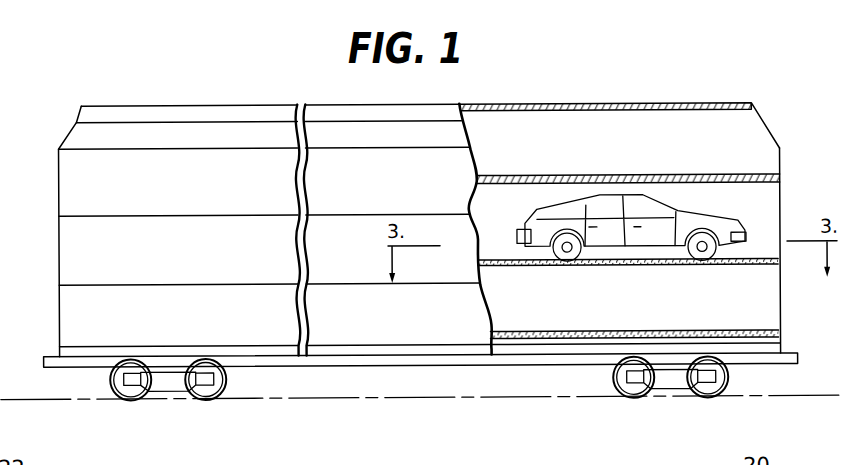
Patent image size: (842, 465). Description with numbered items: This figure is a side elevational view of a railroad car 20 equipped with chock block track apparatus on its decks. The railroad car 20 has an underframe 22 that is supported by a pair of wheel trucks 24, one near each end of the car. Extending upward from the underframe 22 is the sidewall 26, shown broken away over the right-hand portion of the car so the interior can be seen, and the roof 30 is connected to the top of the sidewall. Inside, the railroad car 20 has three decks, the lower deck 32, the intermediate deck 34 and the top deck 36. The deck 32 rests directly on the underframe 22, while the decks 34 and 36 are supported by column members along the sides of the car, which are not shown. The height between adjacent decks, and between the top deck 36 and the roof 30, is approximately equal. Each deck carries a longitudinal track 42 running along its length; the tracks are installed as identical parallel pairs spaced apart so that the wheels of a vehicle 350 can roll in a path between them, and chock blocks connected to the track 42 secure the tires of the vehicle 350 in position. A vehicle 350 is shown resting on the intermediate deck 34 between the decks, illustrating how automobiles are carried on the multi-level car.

The railroad car 20 is at (182, 92).
The underframe 22 is at (451, 358).
The wheel trucks 24 is at (166, 408).
The sidewall 26 is at (182, 261).
The roof 30 is at (617, 104).
The deck 32 is at (766, 334).
The deck 34 is at (772, 266).
The deck 36 is at (769, 177).
The longitudinal track 42 is at (498, 177).
The vehicle 350 is at (622, 197).